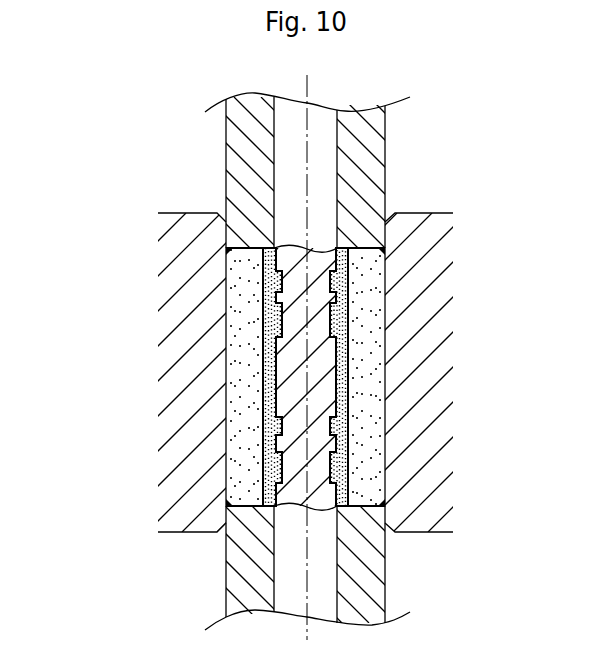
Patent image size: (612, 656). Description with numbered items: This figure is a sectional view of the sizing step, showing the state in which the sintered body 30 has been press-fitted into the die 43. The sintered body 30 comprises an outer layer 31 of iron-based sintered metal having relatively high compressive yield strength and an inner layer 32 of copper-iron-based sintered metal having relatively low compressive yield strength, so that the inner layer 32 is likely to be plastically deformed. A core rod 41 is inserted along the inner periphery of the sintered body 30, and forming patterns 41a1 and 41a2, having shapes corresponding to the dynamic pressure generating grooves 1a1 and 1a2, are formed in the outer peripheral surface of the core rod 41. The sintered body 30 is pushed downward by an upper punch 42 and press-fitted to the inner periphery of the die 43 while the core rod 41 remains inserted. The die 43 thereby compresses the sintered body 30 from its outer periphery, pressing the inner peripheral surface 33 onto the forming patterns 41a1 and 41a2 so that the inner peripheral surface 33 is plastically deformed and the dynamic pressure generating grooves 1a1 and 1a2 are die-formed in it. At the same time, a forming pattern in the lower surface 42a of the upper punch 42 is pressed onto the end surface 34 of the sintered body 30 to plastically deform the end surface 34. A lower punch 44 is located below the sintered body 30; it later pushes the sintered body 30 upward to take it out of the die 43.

The sintered body 30 is at (389, 271).
The outer layer 31 is at (232, 377).
The inner layer 32 is at (348, 362).
The inner peripheral surface 33 is at (341, 386).
The end surface 34 is at (363, 248).
The core rod 41 is at (322, 118).
The forming pattern 41a1 is at (278, 452).
The forming pattern 41a2 is at (280, 302).
The upper punch 42 is at (377, 140).
The lower surface 42a is at (232, 265).
The die 43 is at (428, 310).
The lower punch 44 is at (232, 578).
The dynamic pressure generating groove 1a1 is at (334, 467).
The dynamic pressure generating groove 1a2 is at (332, 283).